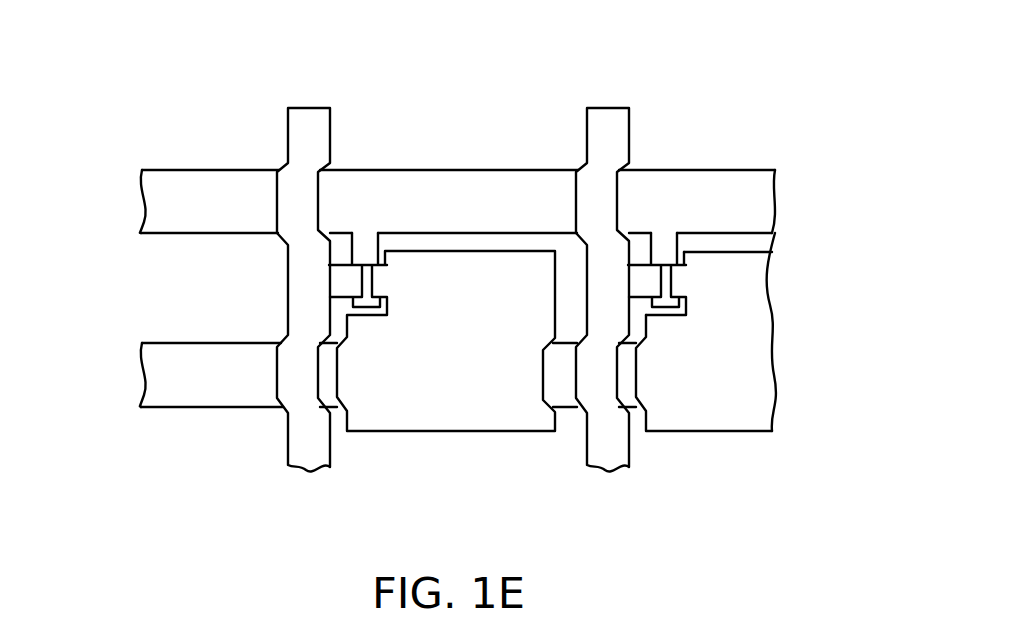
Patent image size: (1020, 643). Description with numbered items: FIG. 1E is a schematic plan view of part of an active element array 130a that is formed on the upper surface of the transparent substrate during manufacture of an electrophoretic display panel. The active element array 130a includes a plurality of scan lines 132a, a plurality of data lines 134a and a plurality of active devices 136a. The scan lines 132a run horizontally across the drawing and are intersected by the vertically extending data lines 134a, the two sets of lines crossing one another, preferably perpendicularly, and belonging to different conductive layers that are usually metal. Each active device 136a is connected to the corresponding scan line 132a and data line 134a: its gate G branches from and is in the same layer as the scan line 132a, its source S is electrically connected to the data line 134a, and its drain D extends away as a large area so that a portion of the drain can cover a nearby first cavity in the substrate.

The active element array 130a is at (774, 481).
The scan line 132a is at (165, 203).
The data line 134a is at (302, 124).
The active device 136a is at (367, 248).